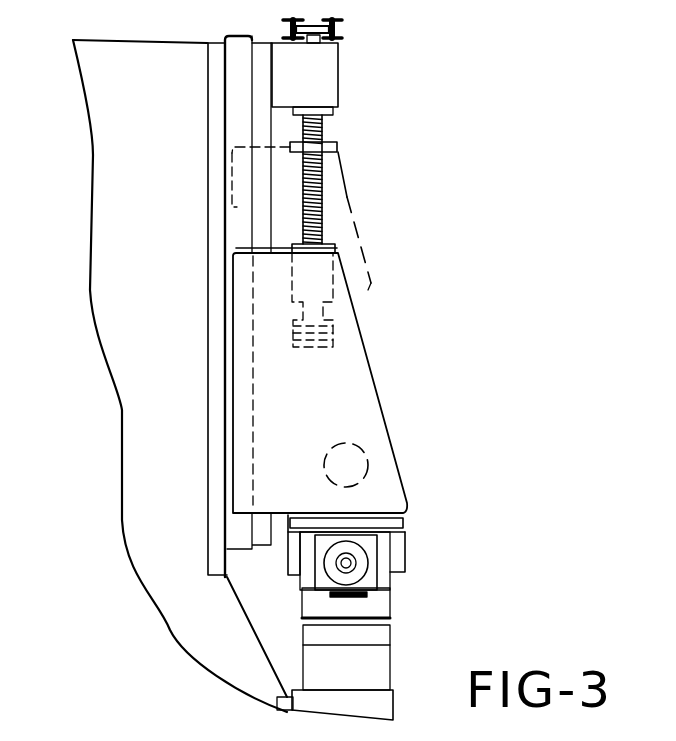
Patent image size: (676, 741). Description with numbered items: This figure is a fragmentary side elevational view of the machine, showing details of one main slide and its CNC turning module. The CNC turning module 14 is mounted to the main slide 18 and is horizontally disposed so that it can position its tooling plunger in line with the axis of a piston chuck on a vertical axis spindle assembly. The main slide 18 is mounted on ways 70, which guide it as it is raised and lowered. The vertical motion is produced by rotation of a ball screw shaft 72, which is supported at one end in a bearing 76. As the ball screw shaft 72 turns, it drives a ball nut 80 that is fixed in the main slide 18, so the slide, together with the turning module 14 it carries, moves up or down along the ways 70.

The CNC turning module 14 is at (405, 570).
The main slide 18 is at (348, 186).
The ways 70 is at (221, 216).
The ball screw shaft 72 is at (324, 201).
The bearing 76 is at (342, 80).
The ball nut 80 is at (333, 272).